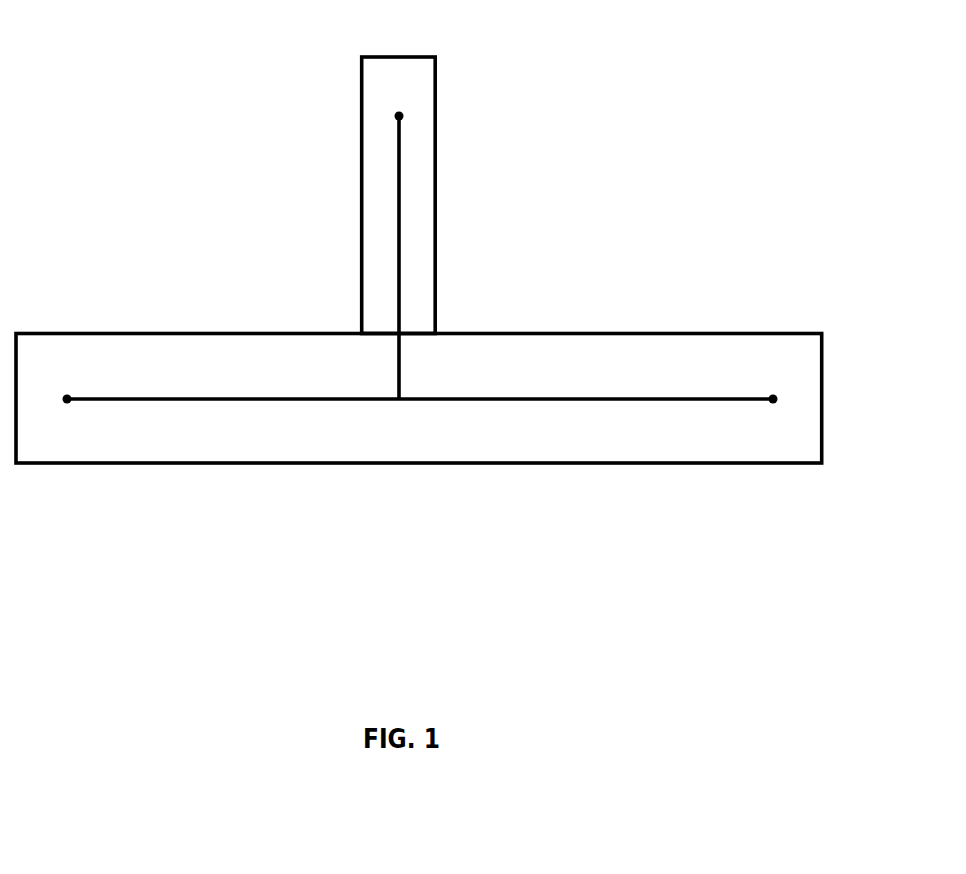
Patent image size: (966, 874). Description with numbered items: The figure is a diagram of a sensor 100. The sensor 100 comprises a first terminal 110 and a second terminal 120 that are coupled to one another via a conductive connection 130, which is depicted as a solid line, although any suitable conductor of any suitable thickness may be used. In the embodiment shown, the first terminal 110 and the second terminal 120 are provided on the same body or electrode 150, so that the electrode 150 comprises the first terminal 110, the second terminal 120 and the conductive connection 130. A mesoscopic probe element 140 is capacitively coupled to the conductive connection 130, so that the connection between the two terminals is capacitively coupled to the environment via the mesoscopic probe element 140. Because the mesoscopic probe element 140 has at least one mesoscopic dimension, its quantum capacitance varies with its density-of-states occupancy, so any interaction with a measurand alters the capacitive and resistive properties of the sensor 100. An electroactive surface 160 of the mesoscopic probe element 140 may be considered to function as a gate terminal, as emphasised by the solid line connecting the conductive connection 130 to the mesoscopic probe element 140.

The sensor 100 is at (166, 66).
The first terminal 110 is at (52, 420).
The second terminal 120 is at (776, 416).
The conductive connection 130 is at (294, 410).
The mesoscopic probe element 140 is at (375, 137).
The electrode 150 is at (499, 468).
The electroactive surface 160 is at (441, 80).